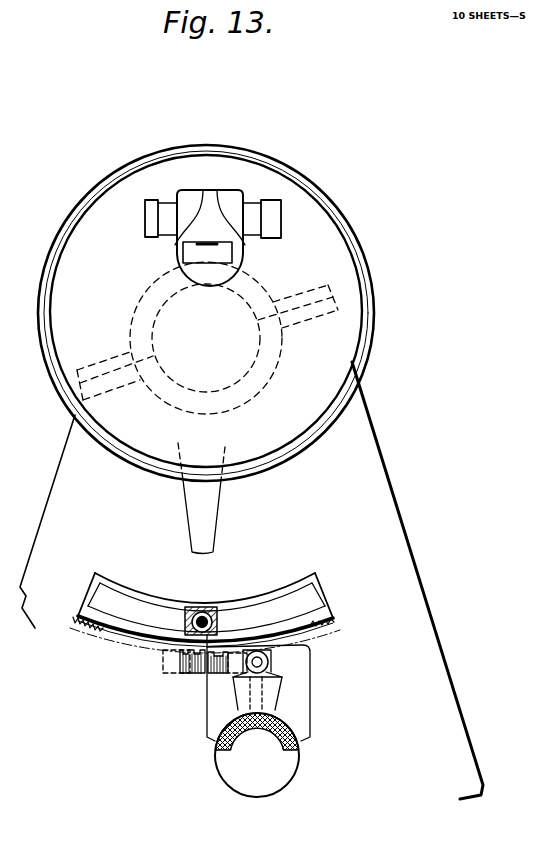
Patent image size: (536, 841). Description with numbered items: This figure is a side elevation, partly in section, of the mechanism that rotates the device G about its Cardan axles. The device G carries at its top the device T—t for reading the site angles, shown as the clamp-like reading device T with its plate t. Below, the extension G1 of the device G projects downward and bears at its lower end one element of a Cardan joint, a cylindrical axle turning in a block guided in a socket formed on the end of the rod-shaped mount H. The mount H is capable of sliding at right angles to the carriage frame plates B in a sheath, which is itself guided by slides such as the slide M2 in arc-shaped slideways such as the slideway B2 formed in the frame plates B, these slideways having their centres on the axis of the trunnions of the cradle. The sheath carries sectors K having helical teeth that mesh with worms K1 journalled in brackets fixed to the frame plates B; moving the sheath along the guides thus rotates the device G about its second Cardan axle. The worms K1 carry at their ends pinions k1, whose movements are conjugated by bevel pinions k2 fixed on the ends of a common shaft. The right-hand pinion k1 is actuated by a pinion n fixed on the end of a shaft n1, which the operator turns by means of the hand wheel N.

The device G is at (333, 367).
The extension G1 is at (210, 512).
The device for reading the site angles T is at (188, 233).
The device for reading the site angles t is at (223, 256).
The carriage frame plates B is at (366, 463).
The arc-shaped slideway B2 is at (160, 633).
The rod-shaped mount H is at (200, 610).
The slide M2 is at (206, 611).
The sector K is at (123, 626).
The worm K1 is at (195, 677).
The pinion k1 is at (240, 666).
The bevel pinion k2 is at (262, 657).
The pinion n is at (266, 683).
The shaft n1 is at (267, 703).
The hand wheel N is at (287, 768).